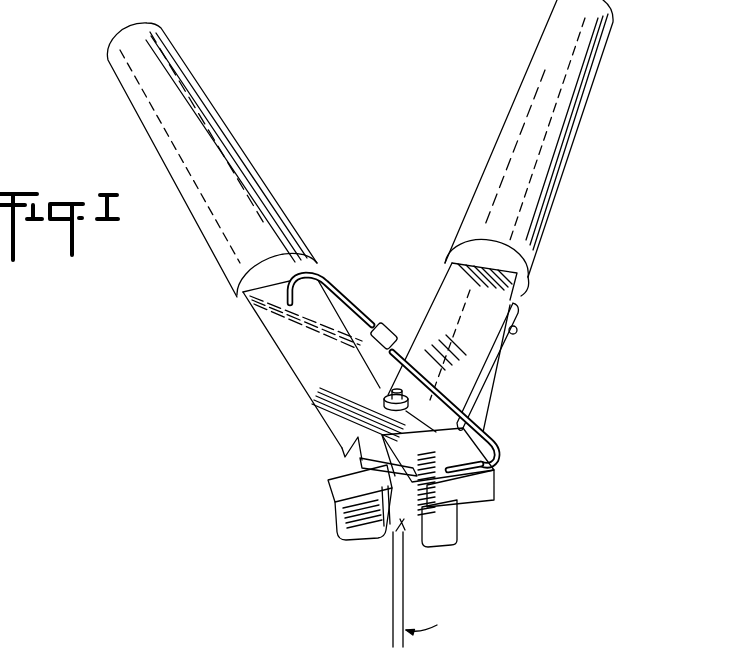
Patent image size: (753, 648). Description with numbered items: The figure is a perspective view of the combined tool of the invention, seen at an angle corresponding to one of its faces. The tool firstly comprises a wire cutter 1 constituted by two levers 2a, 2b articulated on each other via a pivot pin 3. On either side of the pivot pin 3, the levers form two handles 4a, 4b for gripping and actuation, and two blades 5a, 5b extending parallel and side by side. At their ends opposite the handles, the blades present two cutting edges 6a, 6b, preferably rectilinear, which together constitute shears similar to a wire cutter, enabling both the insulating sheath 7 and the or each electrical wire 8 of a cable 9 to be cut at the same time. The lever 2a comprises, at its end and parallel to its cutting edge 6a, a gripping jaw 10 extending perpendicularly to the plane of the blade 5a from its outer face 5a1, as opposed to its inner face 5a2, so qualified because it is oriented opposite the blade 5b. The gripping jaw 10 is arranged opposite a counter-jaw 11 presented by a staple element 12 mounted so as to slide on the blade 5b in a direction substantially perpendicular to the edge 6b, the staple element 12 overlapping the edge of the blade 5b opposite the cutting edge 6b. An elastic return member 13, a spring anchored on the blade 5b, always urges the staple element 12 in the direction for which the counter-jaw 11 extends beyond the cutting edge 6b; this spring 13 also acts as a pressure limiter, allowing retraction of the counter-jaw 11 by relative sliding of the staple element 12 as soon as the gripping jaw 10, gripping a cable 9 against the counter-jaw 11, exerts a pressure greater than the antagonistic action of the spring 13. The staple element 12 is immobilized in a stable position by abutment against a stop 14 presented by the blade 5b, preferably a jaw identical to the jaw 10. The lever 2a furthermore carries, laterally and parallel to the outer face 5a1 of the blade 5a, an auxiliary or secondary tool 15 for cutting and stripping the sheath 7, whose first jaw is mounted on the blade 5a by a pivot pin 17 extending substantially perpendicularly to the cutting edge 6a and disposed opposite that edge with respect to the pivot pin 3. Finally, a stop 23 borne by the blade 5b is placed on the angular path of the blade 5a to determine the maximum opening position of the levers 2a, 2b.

The wire cutter 1 is at (223, 310).
The lever 2a is at (578, 182).
The lever 2b is at (201, 251).
The pivot pin 3 is at (380, 398).
The handle 4a is at (600, 53).
The handle 4b is at (133, 87).
The blade 5a is at (355, 480).
The outer face of blade 5a 5a1 is at (342, 537).
The inner face of blade 5a 5a2 is at (447, 297).
The blade 5b is at (335, 422).
The cutting edge 6a is at (347, 492).
The cutting edge 6b is at (462, 466).
The insulating sheath 7 is at (407, 570).
The electrical wire 8 is at (393, 532).
The cable 9 is at (424, 616).
The gripping jaw 10 is at (360, 537).
The counter-jaw 11 is at (443, 530).
The staple element 12 is at (494, 490).
The elastic return member 13 is at (350, 300).
The stop 14 is at (473, 440).
The auxiliary or secondary tool 15 is at (508, 363).
The pivot pin 17 is at (518, 330).
The stop 23 is at (330, 449).